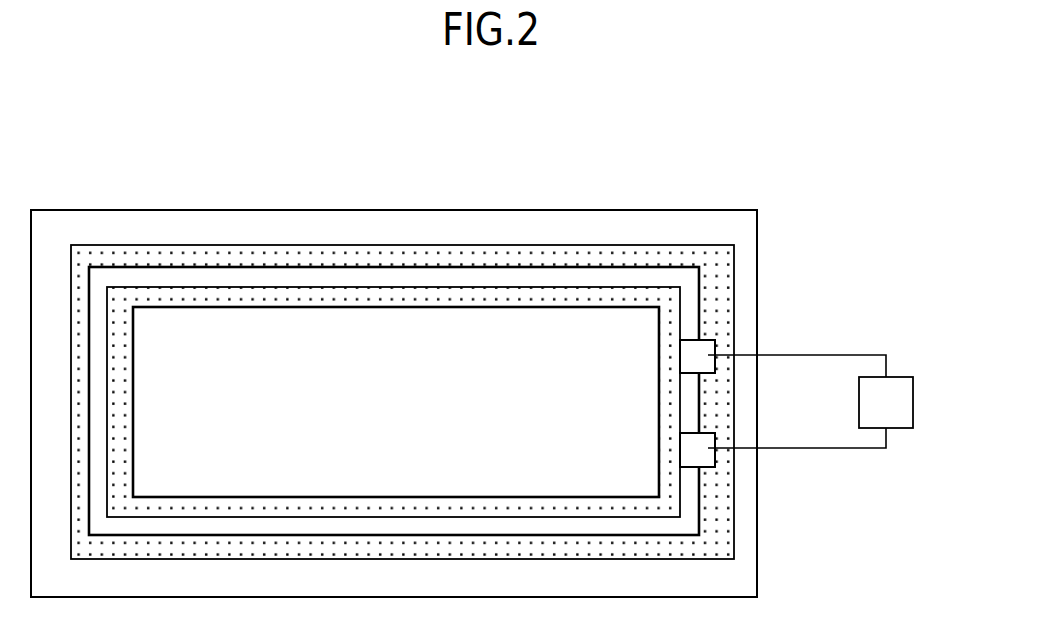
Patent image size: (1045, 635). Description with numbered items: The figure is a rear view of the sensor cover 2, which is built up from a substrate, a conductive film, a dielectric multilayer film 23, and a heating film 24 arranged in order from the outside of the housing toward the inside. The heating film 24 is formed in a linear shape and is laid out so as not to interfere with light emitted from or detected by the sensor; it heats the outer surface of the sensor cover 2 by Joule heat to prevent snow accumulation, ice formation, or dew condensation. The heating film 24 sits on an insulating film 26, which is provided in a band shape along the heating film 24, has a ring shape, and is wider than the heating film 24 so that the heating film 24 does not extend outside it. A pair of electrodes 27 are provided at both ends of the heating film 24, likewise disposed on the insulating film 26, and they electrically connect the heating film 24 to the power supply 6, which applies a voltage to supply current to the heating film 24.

The sensor cover 2 is at (47, 160).
The dielectric multilayer film 23 is at (212, 227).
The insulating film 26 is at (272, 256).
The heating film 24 is at (330, 279).
The electrodes 27 is at (697, 367).
The power supply 6 is at (900, 400).